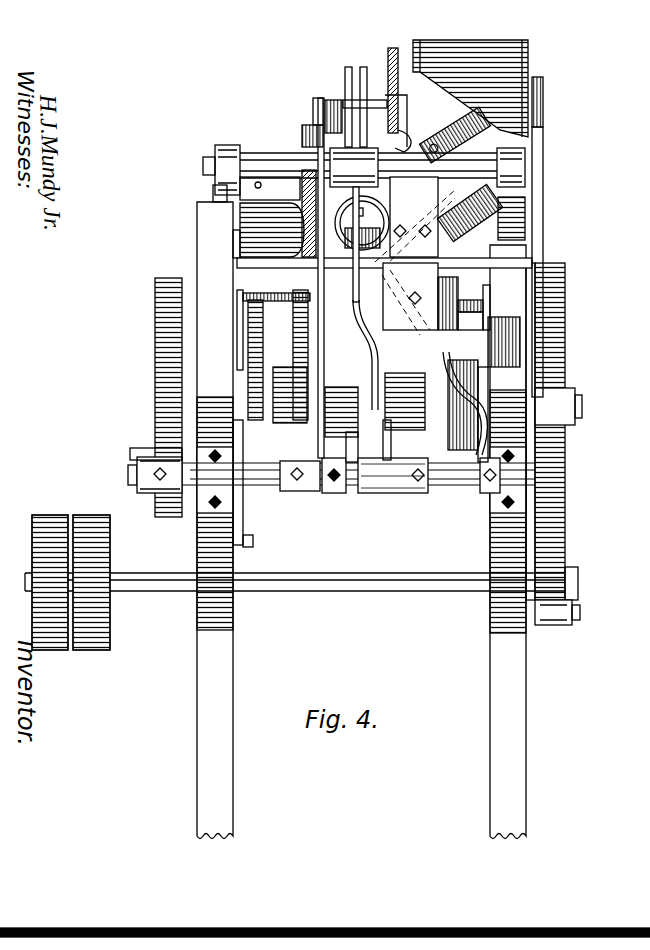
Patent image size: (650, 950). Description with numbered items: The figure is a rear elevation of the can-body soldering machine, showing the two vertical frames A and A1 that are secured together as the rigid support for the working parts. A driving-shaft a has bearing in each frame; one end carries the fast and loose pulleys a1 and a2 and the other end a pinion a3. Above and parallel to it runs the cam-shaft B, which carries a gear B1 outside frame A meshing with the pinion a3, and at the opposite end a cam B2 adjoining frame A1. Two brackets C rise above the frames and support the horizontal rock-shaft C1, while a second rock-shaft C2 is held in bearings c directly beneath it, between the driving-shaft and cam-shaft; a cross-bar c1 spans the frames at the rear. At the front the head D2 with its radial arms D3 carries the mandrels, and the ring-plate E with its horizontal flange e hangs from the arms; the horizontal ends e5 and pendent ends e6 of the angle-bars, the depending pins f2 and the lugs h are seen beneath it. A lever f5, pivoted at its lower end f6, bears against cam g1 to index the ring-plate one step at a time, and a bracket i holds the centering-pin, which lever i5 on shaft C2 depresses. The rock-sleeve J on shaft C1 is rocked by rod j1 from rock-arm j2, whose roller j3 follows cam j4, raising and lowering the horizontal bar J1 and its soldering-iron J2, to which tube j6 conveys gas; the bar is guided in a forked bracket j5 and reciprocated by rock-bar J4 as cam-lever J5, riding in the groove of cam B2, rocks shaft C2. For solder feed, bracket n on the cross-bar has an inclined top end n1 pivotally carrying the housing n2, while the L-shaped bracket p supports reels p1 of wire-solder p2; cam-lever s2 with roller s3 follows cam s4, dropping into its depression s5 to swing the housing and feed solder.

The vertical frame A is at (500, 720).
The vertical frame A1 is at (203, 703).
The driving-shaft a is at (345, 583).
The fast pulley a1 is at (38, 605).
The loose pulley a2 is at (97, 605).
The pinion a3 is at (553, 623).
The cam-shaft B is at (575, 405).
The gear B1 is at (565, 487).
The cam B2 is at (170, 353).
The bracket C is at (217, 152).
The rock-shaft C1 is at (203, 167).
The rock-shaft C2 is at (128, 473).
The bearings c is at (200, 507).
The cross-bar c1 is at (245, 255).
The head D2 is at (293, 177).
The radial arms D3 is at (233, 190).
The ring-plate E is at (482, 297).
The horizontal flange e is at (462, 302).
The end of angle-bar e5 is at (302, 213).
The end of angle-bar e6 is at (505, 350).
The depending pins f2 is at (487, 320).
The lever f5 is at (238, 375).
The lower end of lever f6 is at (238, 517).
The cam g1 is at (253, 350).
The lugs h is at (483, 306).
The bracket i is at (337, 493).
The lever i5 is at (353, 462).
The rock-sleeve J is at (323, 117).
The horizontal bar J1 is at (313, 112).
The soldering-iron J2 is at (362, 97).
The rock-bar J4 is at (317, 280).
The cam-lever J5 is at (348, 80).
The rod j1 is at (320, 266).
The rock-arm j2 is at (388, 440).
The roller j3 is at (398, 450).
The cam j4 is at (398, 432).
The forked bracket j5 is at (342, 72).
The tube j6 is at (399, 90).
The bracket n is at (410, 299).
The top end of bracket n1 is at (450, 222).
The housing n2 is at (454, 135).
The L-shaped bracket p is at (538, 210).
The reels p1 is at (530, 70).
The wire-solder p2 is at (538, 103).
The cam-lever s2 is at (448, 346).
The roller s3 is at (440, 420).
The cam s4 is at (475, 443).
The depression s5 is at (462, 400).